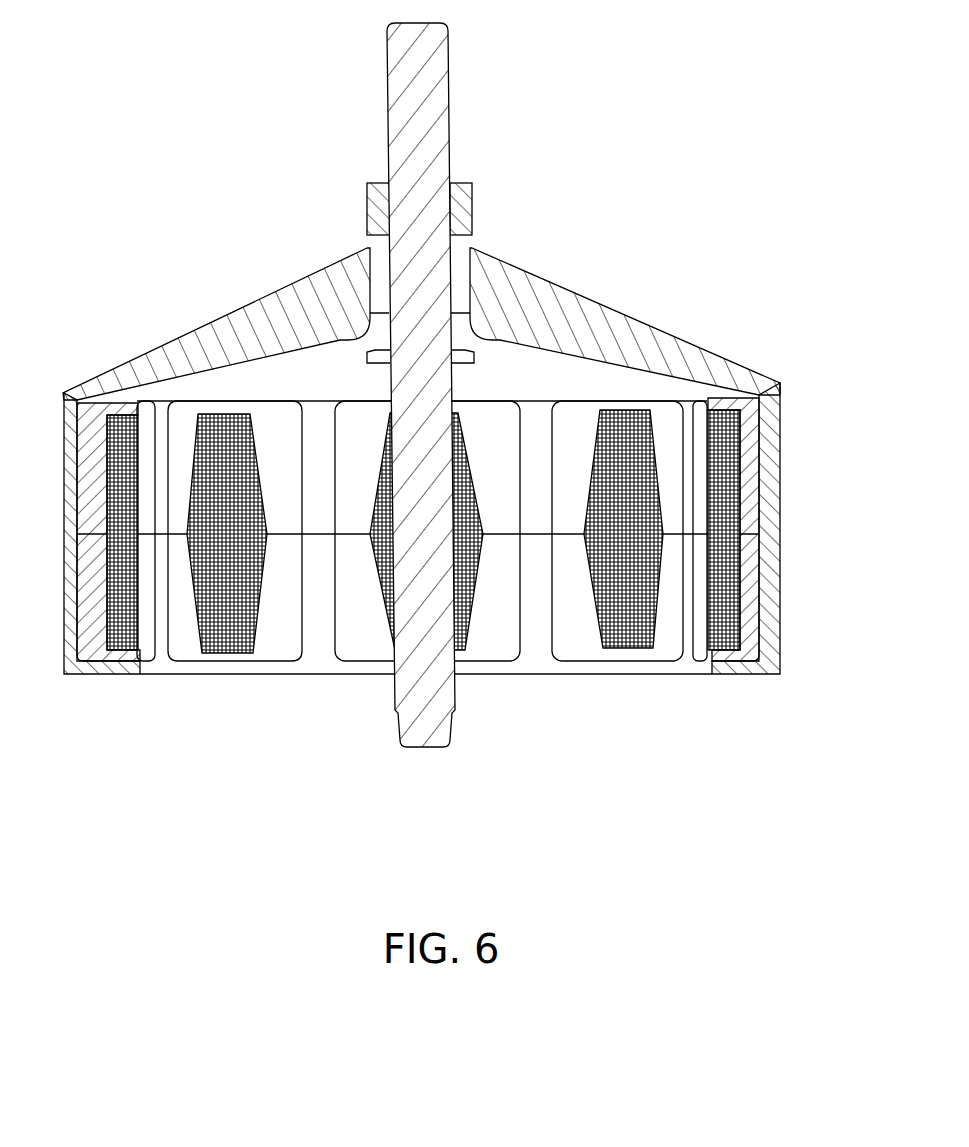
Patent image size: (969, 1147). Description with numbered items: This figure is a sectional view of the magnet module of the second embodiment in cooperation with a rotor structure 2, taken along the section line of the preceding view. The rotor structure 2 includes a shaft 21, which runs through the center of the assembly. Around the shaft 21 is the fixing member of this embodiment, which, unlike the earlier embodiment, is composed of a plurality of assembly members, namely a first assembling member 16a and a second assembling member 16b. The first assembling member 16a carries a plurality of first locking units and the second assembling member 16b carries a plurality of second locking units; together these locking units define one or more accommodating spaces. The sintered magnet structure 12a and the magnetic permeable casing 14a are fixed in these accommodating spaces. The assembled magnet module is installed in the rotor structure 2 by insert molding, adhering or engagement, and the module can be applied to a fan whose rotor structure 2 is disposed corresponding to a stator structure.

The rotor structure 2 is at (337, 267).
The shaft 21 is at (430, 90).
The first assembling member 16a is at (273, 433).
The second assembling member 16b is at (283, 640).
The sintered magnet structure 12a is at (627, 623).
The magnetic permeable casing 14a is at (750, 560).